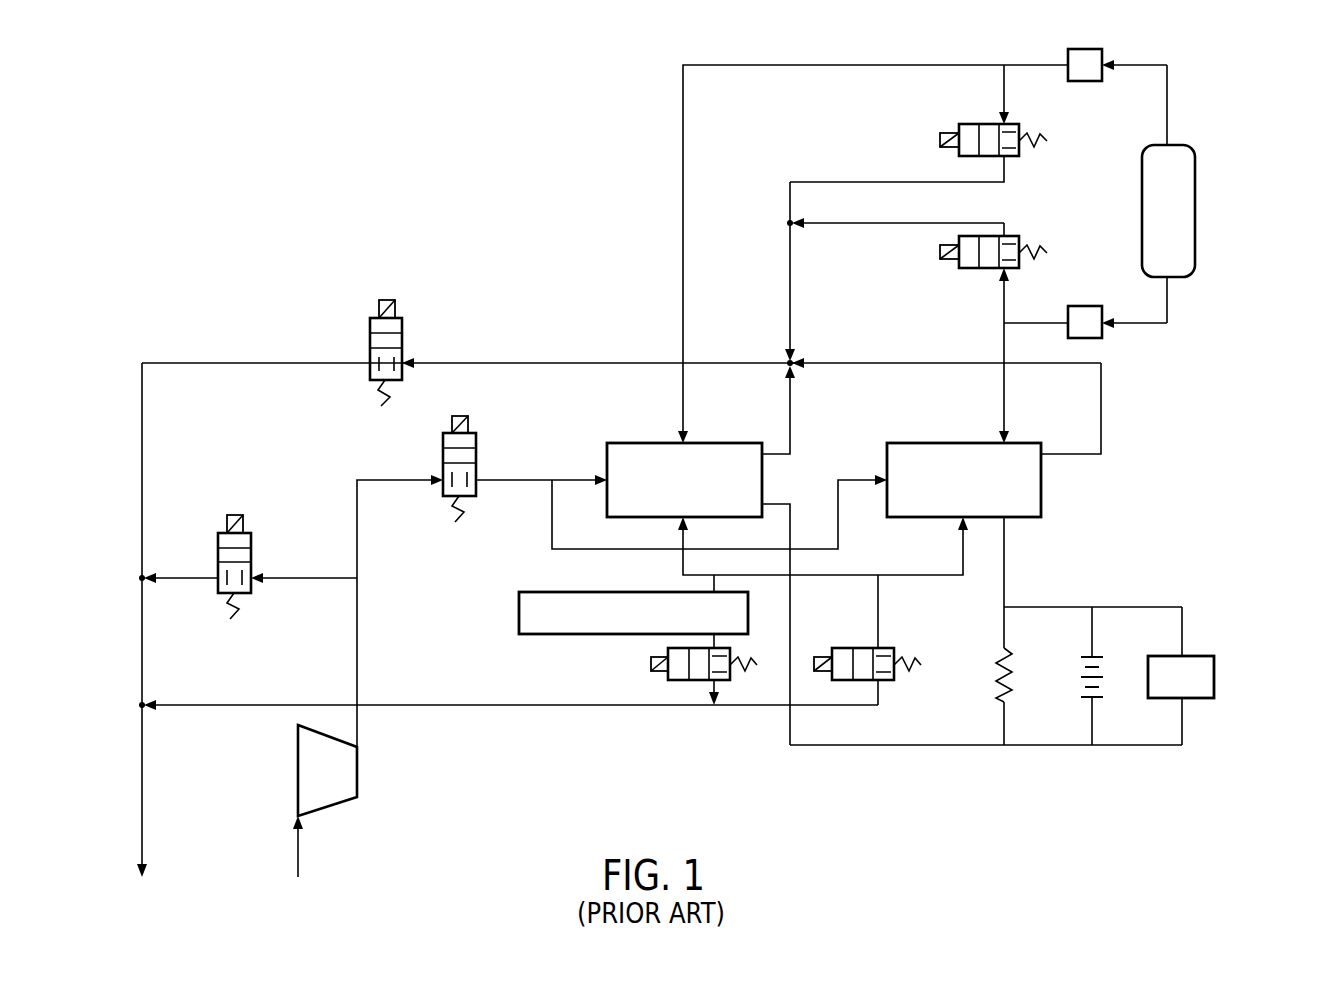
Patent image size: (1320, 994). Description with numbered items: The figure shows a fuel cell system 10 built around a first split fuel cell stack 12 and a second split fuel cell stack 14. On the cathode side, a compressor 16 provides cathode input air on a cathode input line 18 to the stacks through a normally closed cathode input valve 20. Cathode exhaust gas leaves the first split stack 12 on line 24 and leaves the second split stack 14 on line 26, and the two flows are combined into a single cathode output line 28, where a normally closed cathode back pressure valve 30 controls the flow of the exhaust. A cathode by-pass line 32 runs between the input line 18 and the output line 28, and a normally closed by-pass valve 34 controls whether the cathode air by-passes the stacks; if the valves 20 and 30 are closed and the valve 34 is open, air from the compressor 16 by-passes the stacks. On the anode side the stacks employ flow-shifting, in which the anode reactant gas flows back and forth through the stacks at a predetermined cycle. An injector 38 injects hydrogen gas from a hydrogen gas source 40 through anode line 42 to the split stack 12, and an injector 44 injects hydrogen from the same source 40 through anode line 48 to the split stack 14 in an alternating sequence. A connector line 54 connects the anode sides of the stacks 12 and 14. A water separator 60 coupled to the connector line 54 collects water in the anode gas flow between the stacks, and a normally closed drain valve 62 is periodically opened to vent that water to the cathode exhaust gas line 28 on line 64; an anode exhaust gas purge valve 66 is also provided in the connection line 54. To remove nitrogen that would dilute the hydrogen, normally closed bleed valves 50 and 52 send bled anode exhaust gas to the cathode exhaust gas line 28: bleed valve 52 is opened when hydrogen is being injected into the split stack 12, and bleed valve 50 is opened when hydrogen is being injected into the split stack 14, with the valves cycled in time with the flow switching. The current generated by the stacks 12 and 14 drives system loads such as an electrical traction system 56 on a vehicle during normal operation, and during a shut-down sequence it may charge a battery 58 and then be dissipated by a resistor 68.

The fuel cell system 10 is at (338, 190).
The first split fuel cell stack 12 is at (632, 443).
The second split fuel cell stack 14 is at (1041, 494).
The compressor 16 is at (298, 762).
The cathode input line 18 is at (357, 640).
The cathode input valve 20 is at (443, 451).
The line 24 is at (790, 428).
The line 26 is at (1101, 408).
The cathode output line 28 is at (548, 363).
The cathode back pressure valve 30 is at (370, 330).
The cathode by-pass line 32 is at (318, 578).
The by-pass valve 34 is at (218, 548).
The injector 38 is at (1083, 82).
The hydrogen gas source 40 is at (1195, 215).
The anode line 42 is at (683, 146).
The injector 44 is at (1086, 306).
The anode line 48 is at (1004, 352).
The bleed valve 50 is at (970, 124).
The bleed valve 52 is at (975, 268).
The connector line 54 is at (862, 575).
The electrical traction system 56 is at (1214, 672).
The battery 58 is at (1098, 698).
The water separator 60 is at (519, 610).
The drain valve 62 is at (651, 662).
The line 64 is at (464, 705).
The anode exhaust gas purge valve 66 is at (894, 652).
The resistor 68 is at (996, 690).